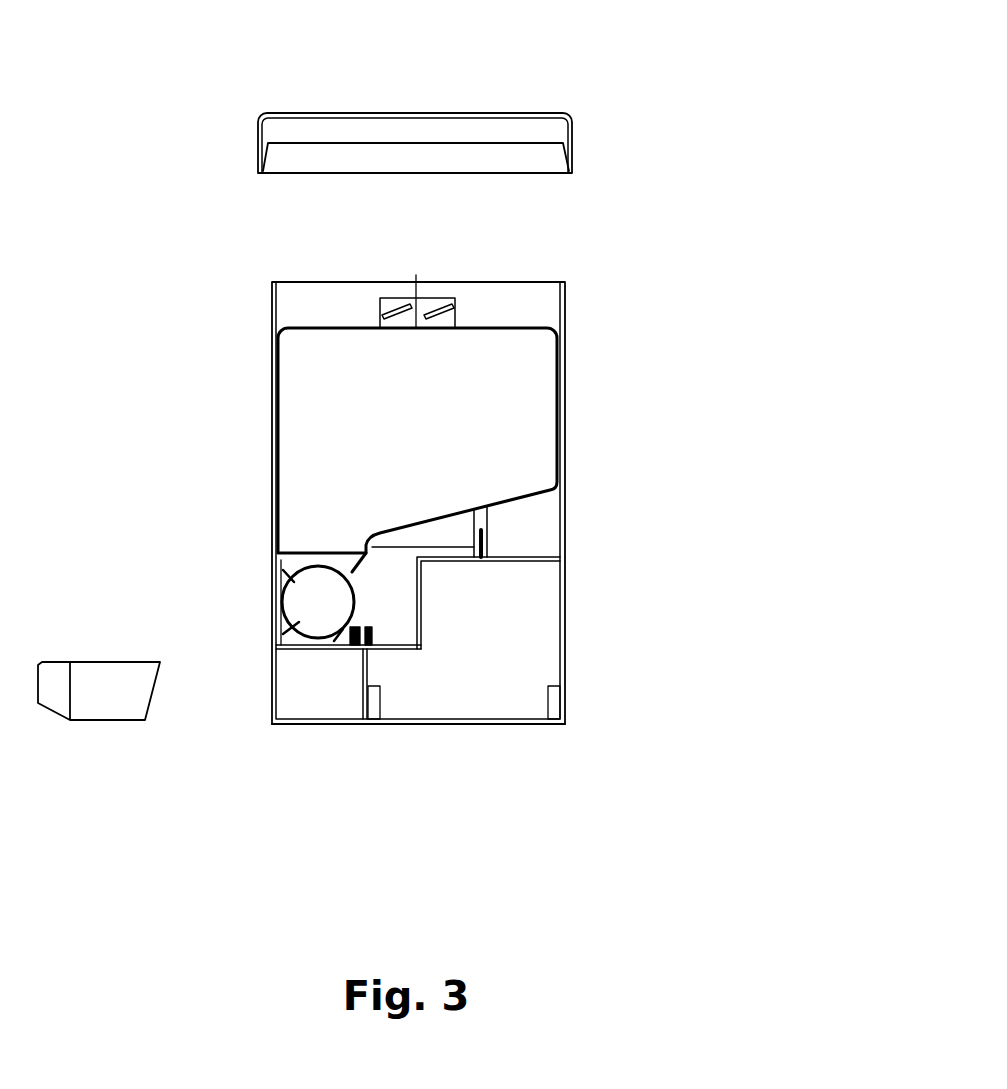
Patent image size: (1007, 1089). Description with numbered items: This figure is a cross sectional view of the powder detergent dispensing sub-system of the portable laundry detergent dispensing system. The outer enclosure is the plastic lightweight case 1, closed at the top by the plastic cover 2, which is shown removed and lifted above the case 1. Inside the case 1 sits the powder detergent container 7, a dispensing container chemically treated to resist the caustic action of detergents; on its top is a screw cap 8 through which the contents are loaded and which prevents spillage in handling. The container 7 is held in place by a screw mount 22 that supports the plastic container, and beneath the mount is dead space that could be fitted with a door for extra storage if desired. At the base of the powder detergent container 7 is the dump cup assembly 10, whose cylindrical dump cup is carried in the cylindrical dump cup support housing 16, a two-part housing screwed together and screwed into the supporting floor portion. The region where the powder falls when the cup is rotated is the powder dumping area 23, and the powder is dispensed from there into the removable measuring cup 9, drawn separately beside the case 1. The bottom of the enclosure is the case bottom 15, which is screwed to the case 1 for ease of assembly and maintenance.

The case 1 is at (567, 318).
The cover 2 is at (505, 112).
The powder detergent container 7 is at (562, 395).
The screw cap 8 is at (455, 300).
The measuring cup 9 is at (93, 718).
The dump cup assembly 10 is at (300, 636).
The case bottom 15 is at (497, 723).
The dump cup support housing 16 is at (357, 600).
The screw mount 22 is at (486, 538).
The powder dumping area 23 is at (281, 620).